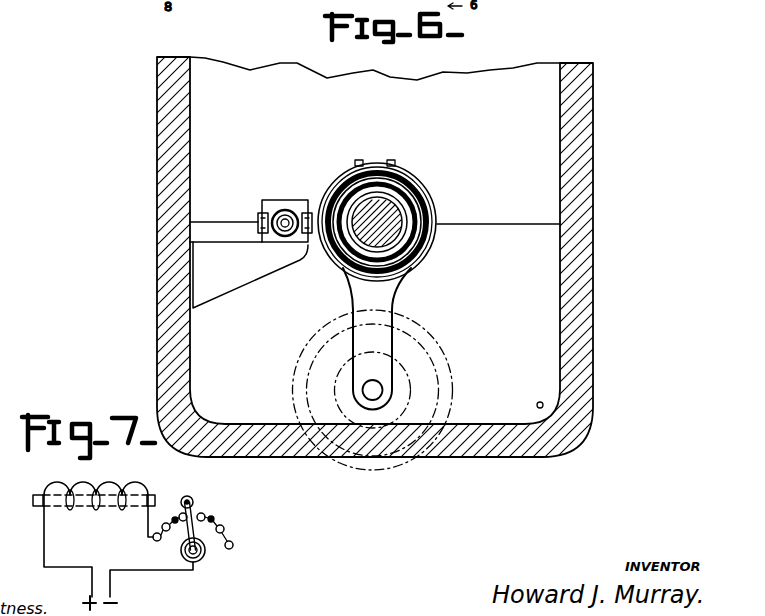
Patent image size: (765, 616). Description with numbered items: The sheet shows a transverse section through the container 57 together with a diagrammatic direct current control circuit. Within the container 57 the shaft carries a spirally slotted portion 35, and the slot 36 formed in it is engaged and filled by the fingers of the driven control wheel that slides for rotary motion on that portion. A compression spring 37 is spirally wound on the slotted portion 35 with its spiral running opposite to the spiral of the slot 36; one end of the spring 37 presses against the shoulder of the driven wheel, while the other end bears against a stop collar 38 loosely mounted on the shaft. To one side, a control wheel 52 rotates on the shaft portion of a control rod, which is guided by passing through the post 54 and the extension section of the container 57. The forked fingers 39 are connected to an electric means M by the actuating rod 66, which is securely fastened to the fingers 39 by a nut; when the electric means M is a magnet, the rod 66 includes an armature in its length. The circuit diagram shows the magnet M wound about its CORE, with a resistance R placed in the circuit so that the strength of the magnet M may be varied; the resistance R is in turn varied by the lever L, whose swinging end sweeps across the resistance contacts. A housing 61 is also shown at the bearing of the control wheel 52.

In FIG. 6, the container 57 is at (583, 170).
In FIG. 6, the post 54 is at (270, 204).
In FIG. 6, the bearing housing 61 is at (303, 188).
In FIG. 6, the control wheel 52 is at (288, 232).
In FIG. 6, the forked fingers 39 is at (396, 165).
In FIG. 6, the stop collar 38 is at (404, 213).
In FIG. 6, the compression spring 37 is at (433, 197).
In FIG. 6, the spirally slotted portion 35 is at (377, 226).
In FIG. 6, the slot 36 is at (346, 270).
In FIG. 6, the actuating rod 66 is at (302, 395).
In FIG. 6, the electric means M is at (440, 373).
In FIG. 7, the electric means M is at (119, 490).
In FIG. 7, the lever L is at (195, 500).
In FIG. 7, the resistance R is at (220, 518).
In FIG. 7, the core CORE is at (110, 507).